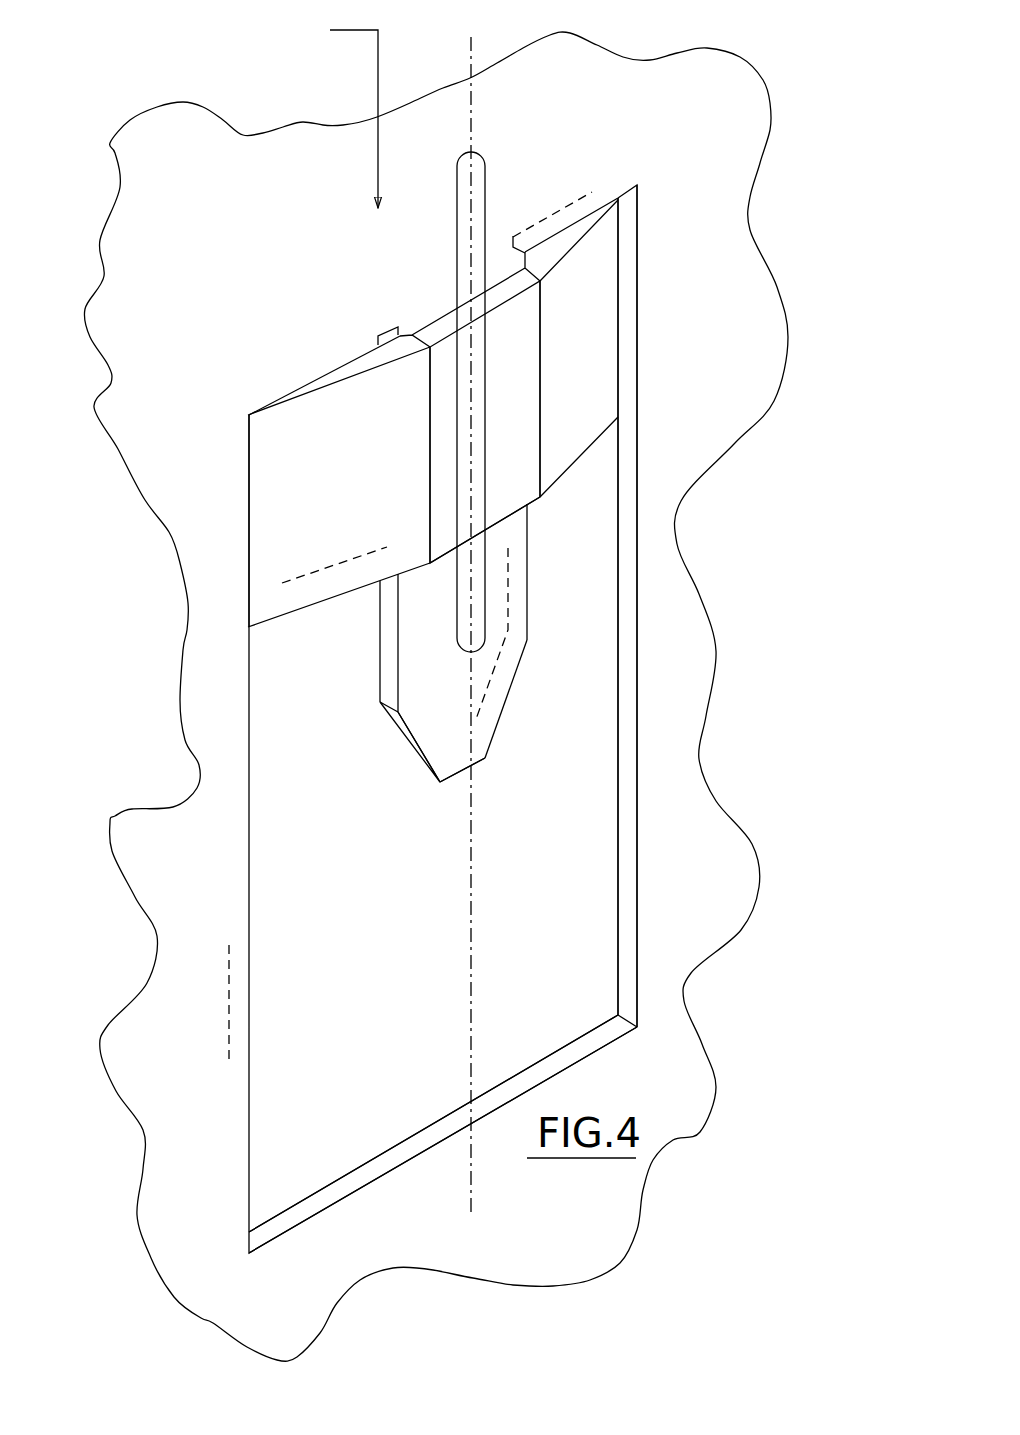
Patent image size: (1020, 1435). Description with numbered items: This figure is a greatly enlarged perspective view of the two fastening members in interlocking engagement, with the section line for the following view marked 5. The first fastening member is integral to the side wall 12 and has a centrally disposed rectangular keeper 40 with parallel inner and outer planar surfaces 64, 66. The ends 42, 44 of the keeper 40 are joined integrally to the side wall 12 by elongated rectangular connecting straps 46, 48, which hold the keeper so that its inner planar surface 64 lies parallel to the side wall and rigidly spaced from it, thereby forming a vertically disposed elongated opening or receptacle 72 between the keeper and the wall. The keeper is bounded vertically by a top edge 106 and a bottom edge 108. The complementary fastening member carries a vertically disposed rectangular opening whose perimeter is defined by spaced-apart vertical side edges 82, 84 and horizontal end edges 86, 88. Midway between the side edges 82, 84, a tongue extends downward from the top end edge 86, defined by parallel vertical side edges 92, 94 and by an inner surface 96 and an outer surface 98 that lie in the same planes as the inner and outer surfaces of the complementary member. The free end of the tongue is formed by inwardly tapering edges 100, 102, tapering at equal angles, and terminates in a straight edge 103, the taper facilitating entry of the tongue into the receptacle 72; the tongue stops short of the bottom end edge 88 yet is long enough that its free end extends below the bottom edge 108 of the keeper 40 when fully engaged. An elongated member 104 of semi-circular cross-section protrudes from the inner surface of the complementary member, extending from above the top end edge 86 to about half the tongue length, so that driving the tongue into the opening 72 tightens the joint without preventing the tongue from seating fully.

The side wall 12 is at (228, 245).
The vertically disposed elongated opening 72 is at (335, 115).
The section line 5- 5 is at (468, 40).
The elongated member 104 is at (487, 167).
The top end edge 86 is at (592, 192).
The inner planar surface 64 is at (433, 322).
The top edge 106 is at (364, 358).
The keeper 40 is at (480, 410).
The end 42 is at (426, 448).
The end 44 is at (543, 361).
The connecting strap 46 is at (282, 448).
The connecting strap 48 is at (597, 380).
The outer planar surface 66 is at (512, 448).
The bottom edge 108 is at (310, 585).
The outer surface 98 is at (378, 630).
The side edge 92 is at (387, 665).
The inwardly tapering edge 100 is at (417, 765).
The inner surface 96 is at (452, 748).
The straight edge 103 is at (470, 768).
The inwardly tapering edge 102 is at (512, 683).
The side edge 94 is at (527, 545).
The side edge 84 is at (630, 858).
The side edge 82 is at (229, 1007).
The bottom end edge 88 is at (433, 1130).